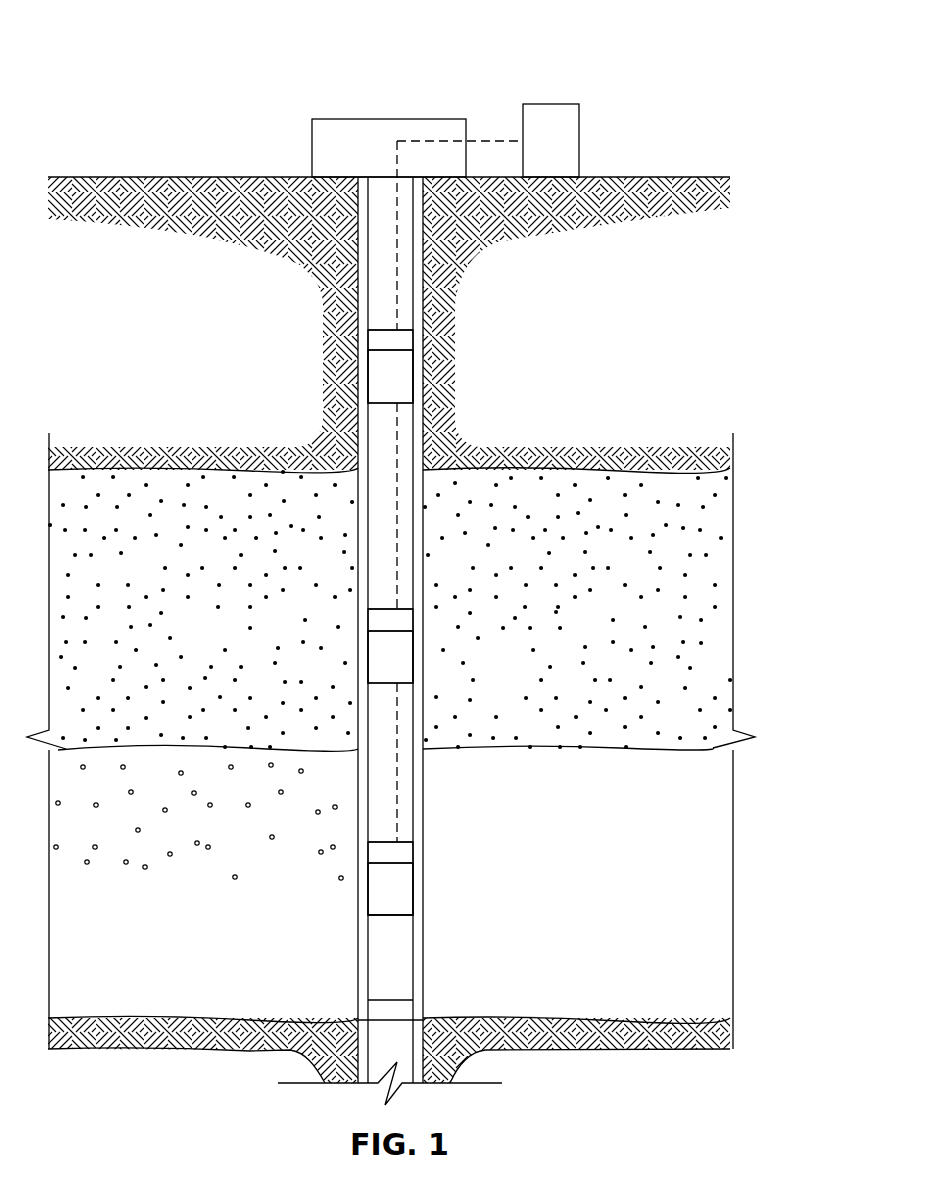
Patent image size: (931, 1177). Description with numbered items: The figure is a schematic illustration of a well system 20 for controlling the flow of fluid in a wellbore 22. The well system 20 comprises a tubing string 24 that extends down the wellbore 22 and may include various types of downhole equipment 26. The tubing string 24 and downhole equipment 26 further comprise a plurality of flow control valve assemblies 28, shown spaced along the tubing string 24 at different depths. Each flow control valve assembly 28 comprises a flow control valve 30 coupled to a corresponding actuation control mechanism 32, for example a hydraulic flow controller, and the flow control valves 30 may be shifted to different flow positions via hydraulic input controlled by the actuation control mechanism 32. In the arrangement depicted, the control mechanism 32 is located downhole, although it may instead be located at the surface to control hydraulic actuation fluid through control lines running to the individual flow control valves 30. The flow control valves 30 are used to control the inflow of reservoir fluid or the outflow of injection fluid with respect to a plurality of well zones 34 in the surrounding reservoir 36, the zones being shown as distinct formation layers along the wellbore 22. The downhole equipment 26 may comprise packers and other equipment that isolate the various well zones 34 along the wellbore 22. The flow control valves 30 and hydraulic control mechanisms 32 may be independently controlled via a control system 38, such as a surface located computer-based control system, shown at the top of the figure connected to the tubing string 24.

The well system 20 is at (727, 43).
The wellbore 22 is at (359, 332).
The tubing string 24 is at (413, 243).
The downhole equipment 26 is at (423, 331).
The flow control valve assembly 28 is at (358, 378).
The flow control valve 30 is at (413, 382).
The actuation control mechanism 32 is at (413, 340).
The well zone 34 is at (283, 220).
The reservoir 36 is at (605, 634).
The control system 38 is at (580, 141).